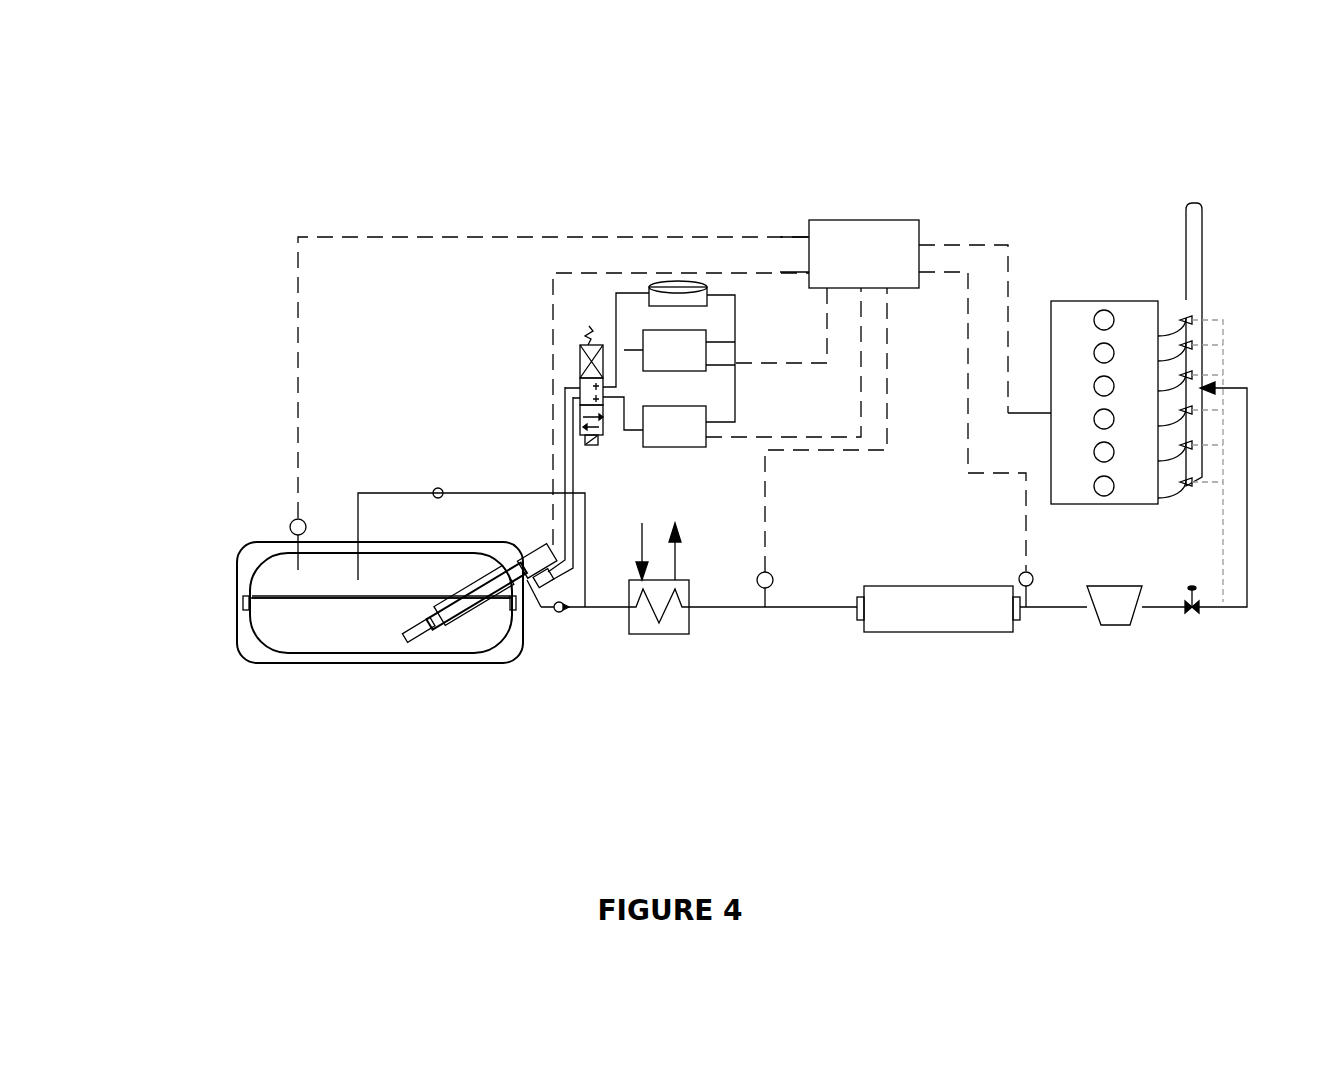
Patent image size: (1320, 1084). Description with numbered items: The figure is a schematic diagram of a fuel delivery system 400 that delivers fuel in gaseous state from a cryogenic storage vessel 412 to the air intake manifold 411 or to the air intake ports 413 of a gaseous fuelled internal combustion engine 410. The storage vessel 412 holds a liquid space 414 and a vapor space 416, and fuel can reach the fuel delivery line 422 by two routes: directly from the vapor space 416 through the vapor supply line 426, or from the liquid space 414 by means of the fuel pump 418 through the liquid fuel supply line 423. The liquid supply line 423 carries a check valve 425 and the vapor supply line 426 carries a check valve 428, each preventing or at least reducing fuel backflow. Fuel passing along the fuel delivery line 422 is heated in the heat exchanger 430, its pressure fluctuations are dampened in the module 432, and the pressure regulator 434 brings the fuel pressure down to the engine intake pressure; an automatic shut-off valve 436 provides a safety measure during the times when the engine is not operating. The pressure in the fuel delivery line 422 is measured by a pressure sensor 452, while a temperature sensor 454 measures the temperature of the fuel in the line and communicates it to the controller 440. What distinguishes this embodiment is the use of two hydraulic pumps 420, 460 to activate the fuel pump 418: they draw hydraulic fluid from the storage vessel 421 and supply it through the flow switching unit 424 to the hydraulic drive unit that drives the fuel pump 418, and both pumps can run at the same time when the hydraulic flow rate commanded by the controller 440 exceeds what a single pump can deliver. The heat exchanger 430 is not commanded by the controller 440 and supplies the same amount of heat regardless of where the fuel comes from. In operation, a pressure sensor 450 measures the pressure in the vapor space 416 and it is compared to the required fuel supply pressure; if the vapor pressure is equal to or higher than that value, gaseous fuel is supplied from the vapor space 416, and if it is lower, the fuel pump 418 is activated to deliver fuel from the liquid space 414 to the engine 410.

The fuel delivery system 400 is at (335, 172).
The gaseous fuelled internal combustion engine 410 is at (1092, 296).
The air intake manifold 411 is at (1197, 250).
The cryogenic storage vessel 412 is at (250, 556).
The air intake ports 413 is at (1170, 486).
The liquid space 414 is at (315, 628).
The vapor space 416 is at (327, 568).
The fuel pump 418 is at (428, 627).
The hydraulic pump 420 is at (673, 340).
The hydraulic fluid storage vessel 421 is at (658, 296).
The fuel delivery line 422 is at (812, 607).
The liquid fuel supply line 423 is at (532, 600).
The flow switching unit 424 is at (582, 344).
The check valve 425 is at (562, 612).
The vapor supply line 426 is at (387, 493).
The check valve 428 is at (447, 490).
The heat exchanger 430 is at (655, 634).
The module 432 is at (933, 620).
The pressure regulator 434 is at (1117, 605).
The automatic shut-off valve 436 is at (1193, 613).
The controller 440 is at (842, 233).
The pressure sensor 450 is at (292, 520).
The pressure sensor 452 is at (1033, 572).
The temperature sensor 454 is at (773, 571).
The hydraulic pump 460 is at (668, 432).